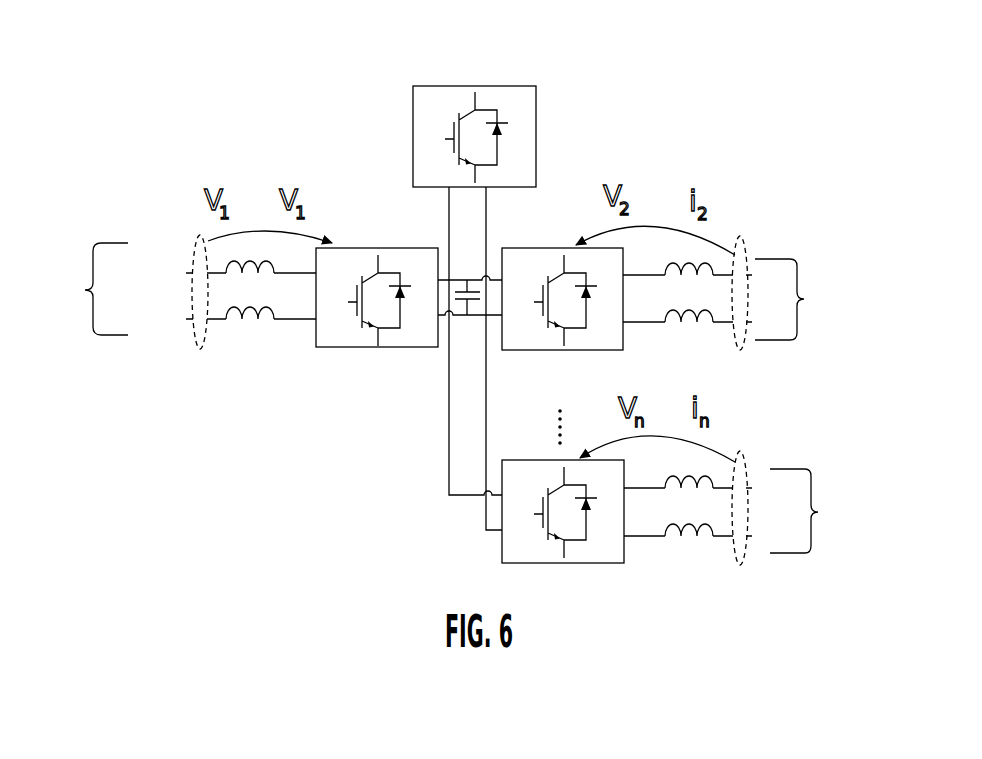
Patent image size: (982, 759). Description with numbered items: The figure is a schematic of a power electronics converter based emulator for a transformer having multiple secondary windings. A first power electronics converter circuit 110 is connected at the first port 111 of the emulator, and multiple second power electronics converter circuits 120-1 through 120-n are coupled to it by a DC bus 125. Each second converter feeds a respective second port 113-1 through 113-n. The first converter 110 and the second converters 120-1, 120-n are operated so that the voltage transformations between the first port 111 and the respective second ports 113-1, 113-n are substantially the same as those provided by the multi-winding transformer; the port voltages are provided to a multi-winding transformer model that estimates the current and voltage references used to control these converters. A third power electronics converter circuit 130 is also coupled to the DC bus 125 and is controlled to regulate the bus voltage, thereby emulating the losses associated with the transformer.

The first power electronics converter circuit 110 is at (232, 402).
The first port 111 is at (85, 289).
The third power electronics converter circuit 130 is at (395, 112).
The DC bus 125 is at (472, 336).
The second power electronics converter circuit 120-1 is at (724, 200).
The second power electronics converter circuit 120-n is at (764, 405).
The second port 113-1 is at (810, 299).
The second port 113-n is at (825, 511).